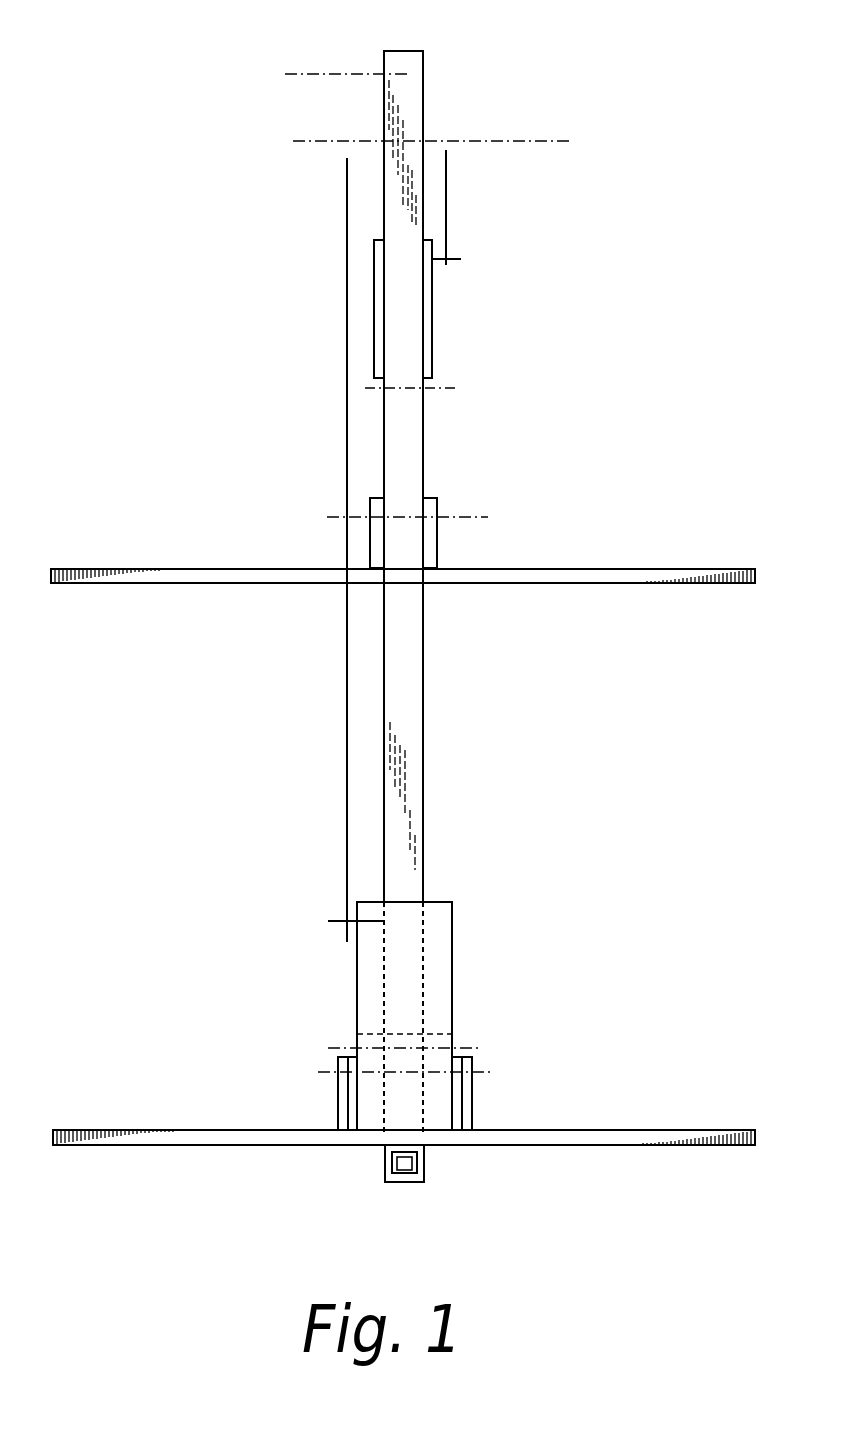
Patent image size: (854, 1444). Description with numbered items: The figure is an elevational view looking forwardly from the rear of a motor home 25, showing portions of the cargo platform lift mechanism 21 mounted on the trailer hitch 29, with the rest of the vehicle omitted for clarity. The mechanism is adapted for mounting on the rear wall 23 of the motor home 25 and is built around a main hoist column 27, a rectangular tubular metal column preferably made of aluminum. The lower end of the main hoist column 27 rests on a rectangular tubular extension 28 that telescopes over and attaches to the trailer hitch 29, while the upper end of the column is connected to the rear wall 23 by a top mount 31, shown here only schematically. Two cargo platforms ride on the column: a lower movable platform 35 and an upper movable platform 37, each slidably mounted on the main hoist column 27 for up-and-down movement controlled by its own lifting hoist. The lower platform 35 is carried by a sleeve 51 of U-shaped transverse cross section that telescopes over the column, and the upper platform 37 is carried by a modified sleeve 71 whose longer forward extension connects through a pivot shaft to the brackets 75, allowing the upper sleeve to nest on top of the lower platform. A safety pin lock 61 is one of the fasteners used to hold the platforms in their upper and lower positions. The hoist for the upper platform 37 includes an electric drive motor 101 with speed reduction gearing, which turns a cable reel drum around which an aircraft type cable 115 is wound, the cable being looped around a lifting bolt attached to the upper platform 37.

The cargo platform lift mechanism 21 is at (313, 824).
The rear wall 23 is at (613, 516).
The motor home 25 is at (187, 505).
The main hoist column 27 is at (413, 702).
The rectangular tubular extension 28 is at (402, 1178).
The trailer hitch 29 is at (419, 1161).
The top mount 31 is at (330, 72).
The lower movable platform 35 is at (192, 1128).
The upper movable platform 37 is at (156, 572).
The sleeve 51 is at (443, 925).
The safety pin lock 61 is at (465, 1048).
The modified sleeve 71 is at (437, 538).
The brackets 75 is at (432, 506).
The electric drive motor 101 is at (498, 140).
The aircraft type cable 115 is at (447, 180).